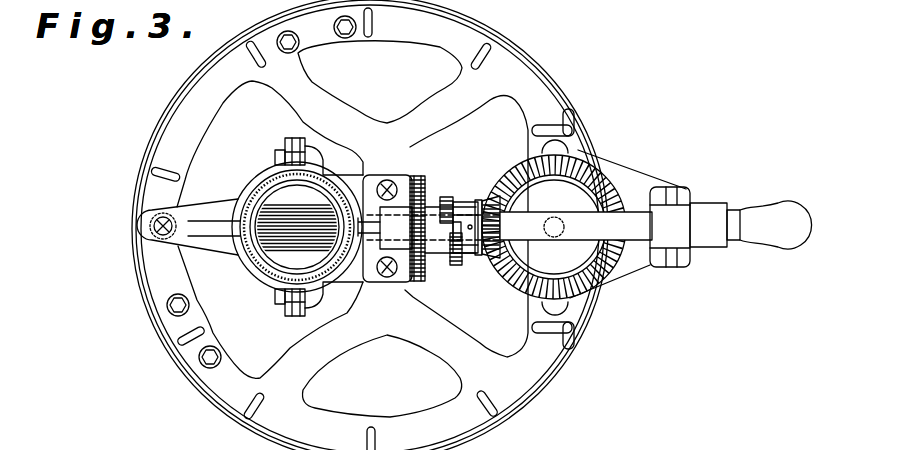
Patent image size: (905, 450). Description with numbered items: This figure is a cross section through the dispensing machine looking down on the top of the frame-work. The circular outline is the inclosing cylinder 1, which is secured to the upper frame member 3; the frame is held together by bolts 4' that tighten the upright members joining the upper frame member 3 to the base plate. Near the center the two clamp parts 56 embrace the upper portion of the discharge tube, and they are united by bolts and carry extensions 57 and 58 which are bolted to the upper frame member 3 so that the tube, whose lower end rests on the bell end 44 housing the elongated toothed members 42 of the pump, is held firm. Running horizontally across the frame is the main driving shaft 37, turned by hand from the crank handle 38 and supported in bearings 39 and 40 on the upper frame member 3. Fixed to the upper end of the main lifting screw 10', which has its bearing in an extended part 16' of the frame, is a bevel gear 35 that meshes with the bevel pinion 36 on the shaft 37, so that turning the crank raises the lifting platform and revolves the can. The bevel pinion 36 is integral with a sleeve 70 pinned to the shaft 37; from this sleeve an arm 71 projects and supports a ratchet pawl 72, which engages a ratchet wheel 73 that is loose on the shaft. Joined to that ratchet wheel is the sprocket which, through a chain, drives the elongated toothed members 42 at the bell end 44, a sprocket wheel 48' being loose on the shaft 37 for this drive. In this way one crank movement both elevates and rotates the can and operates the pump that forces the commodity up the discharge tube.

The inclosing cylinder 1 is at (534, 395).
The upper frame member 3 is at (342, 229).
The bolts 4' is at (394, 192).
The main lifting screw 10' is at (538, 243).
The extended part of the frame 16' is at (593, 223).
The bevel gear 35 is at (554, 221).
The bevel pinion 36 is at (488, 262).
The main driving shaft 37 is at (582, 230).
The crank handle 38 is at (708, 240).
The bearing 39 is at (665, 232).
The bearing 40 is at (418, 150).
The elongated toothed members 42 is at (305, 250).
The bell end 44 is at (283, 253).
The sprocket wheel 48' is at (393, 247).
The clamp parts 56 is at (263, 183).
The extension 57 is at (392, 225).
The extension 58 is at (202, 213).
The sleeve 70 is at (463, 266).
The arm 71 is at (462, 215).
The ratchet pawl 72 is at (450, 262).
The ratchet wheel 73 is at (447, 197).